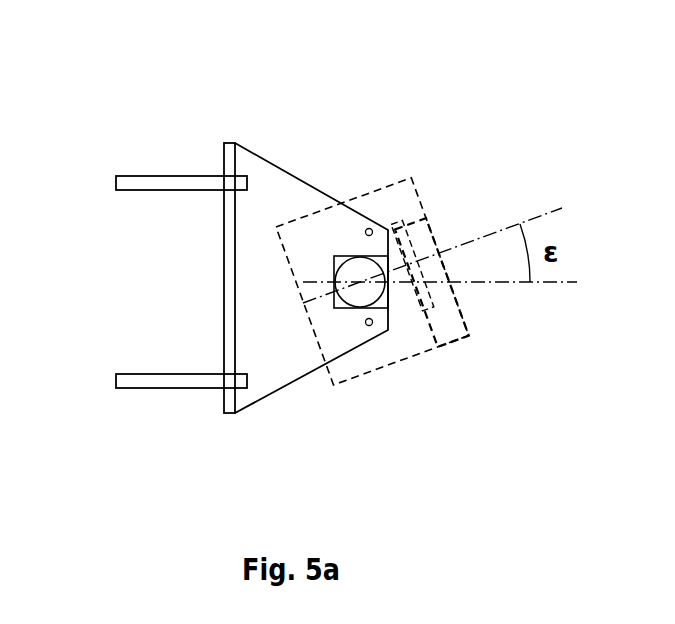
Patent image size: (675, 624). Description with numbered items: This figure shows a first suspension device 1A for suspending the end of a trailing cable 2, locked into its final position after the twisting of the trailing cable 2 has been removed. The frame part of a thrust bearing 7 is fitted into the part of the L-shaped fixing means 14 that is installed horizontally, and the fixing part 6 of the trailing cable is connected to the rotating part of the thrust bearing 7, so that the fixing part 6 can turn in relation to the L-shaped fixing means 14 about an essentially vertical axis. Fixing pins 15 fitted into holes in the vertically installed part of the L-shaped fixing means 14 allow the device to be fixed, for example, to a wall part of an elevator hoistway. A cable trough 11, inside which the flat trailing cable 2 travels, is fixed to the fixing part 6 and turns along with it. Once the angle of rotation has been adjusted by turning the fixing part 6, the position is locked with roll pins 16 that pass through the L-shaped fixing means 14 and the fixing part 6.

The suspension device 1A is at (480, 88).
The trailing cable 2 is at (428, 313).
The fixing part of the trailing cable 6 is at (355, 380).
The thrust bearing 7 is at (347, 254).
The cable trough 11 is at (438, 350).
The L-shaped fixing means 14 is at (224, 277).
The fixing pins 15 is at (170, 177).
The roll pins 16 is at (370, 228).